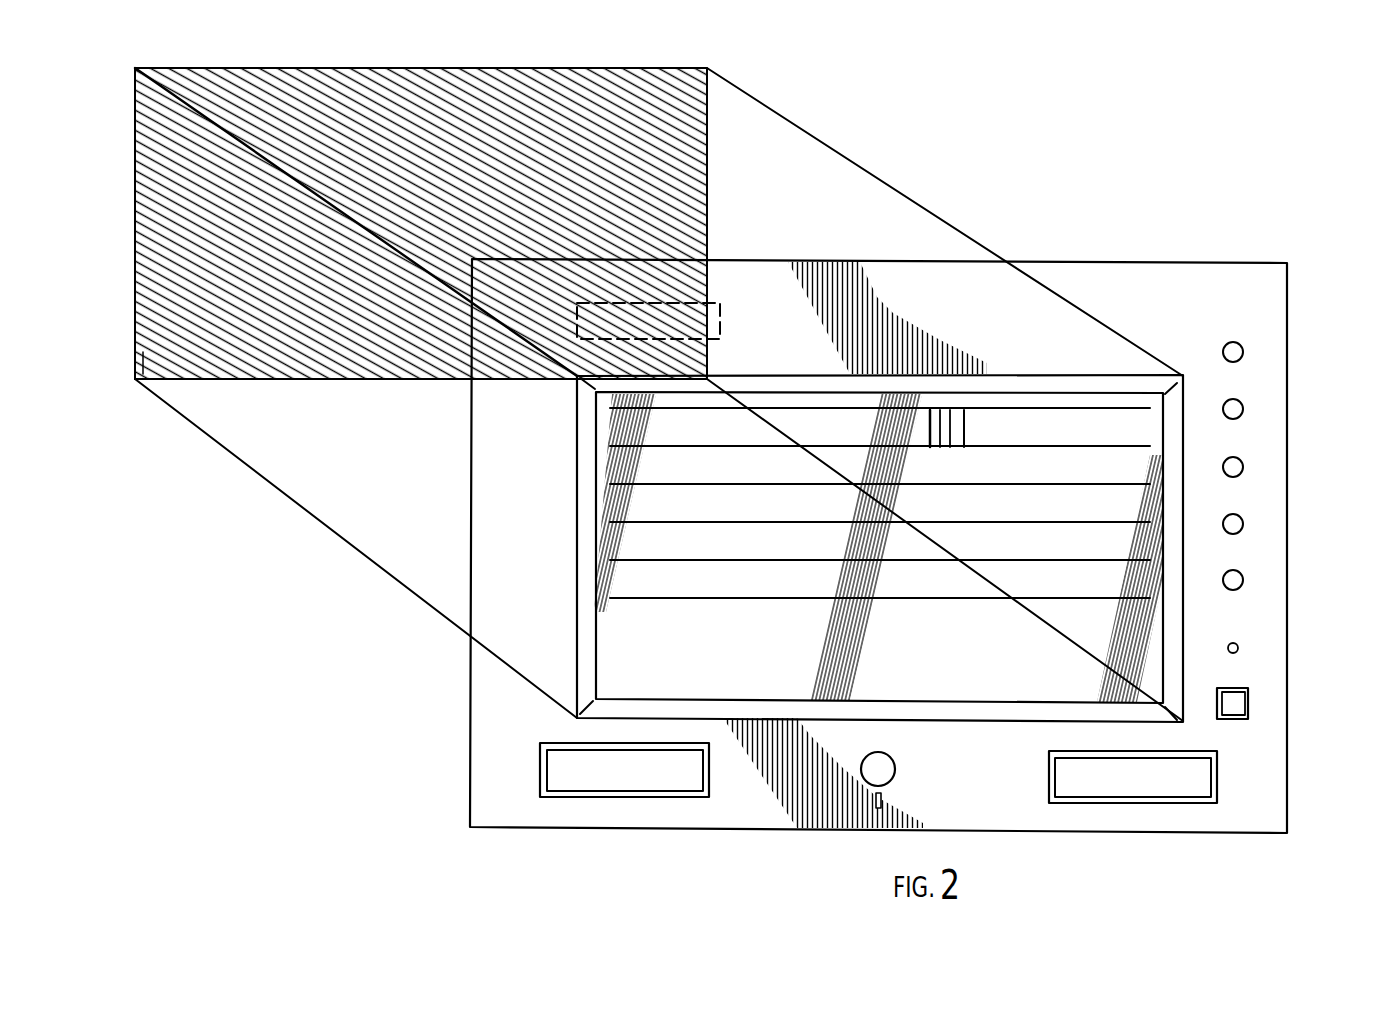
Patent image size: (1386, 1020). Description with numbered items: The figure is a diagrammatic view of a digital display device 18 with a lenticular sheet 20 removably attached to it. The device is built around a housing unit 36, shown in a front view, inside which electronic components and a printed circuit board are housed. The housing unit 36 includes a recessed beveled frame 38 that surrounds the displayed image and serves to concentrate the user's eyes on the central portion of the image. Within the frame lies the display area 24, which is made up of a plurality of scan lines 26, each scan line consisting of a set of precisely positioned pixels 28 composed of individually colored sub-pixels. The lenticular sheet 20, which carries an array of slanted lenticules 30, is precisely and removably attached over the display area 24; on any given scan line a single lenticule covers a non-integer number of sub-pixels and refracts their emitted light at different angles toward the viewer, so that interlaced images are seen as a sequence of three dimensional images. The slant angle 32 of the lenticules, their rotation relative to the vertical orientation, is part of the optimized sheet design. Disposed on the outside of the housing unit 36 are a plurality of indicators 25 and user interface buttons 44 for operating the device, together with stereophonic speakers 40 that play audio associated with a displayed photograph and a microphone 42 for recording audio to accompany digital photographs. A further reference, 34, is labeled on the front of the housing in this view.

The digital display device 18 is at (890, 566).
The lenticular sheet 20 is at (219, 66).
The display area 24 is at (640, 645).
The indicators 25 is at (1239, 647).
The scan lines 26 is at (993, 565).
The pixels 28 is at (942, 420).
The slanted lenticules 30 is at (152, 302).
The slant angle 32 is at (143, 360).
The housing front panel 34 is at (472, 716).
The housing unit 36 is at (540, 446).
The recessed beveled frame 38 is at (585, 522).
The stereophonic speakers 40 is at (638, 780).
The microphone 42 is at (860, 777).
The user interface buttons 44 is at (1297, 337).